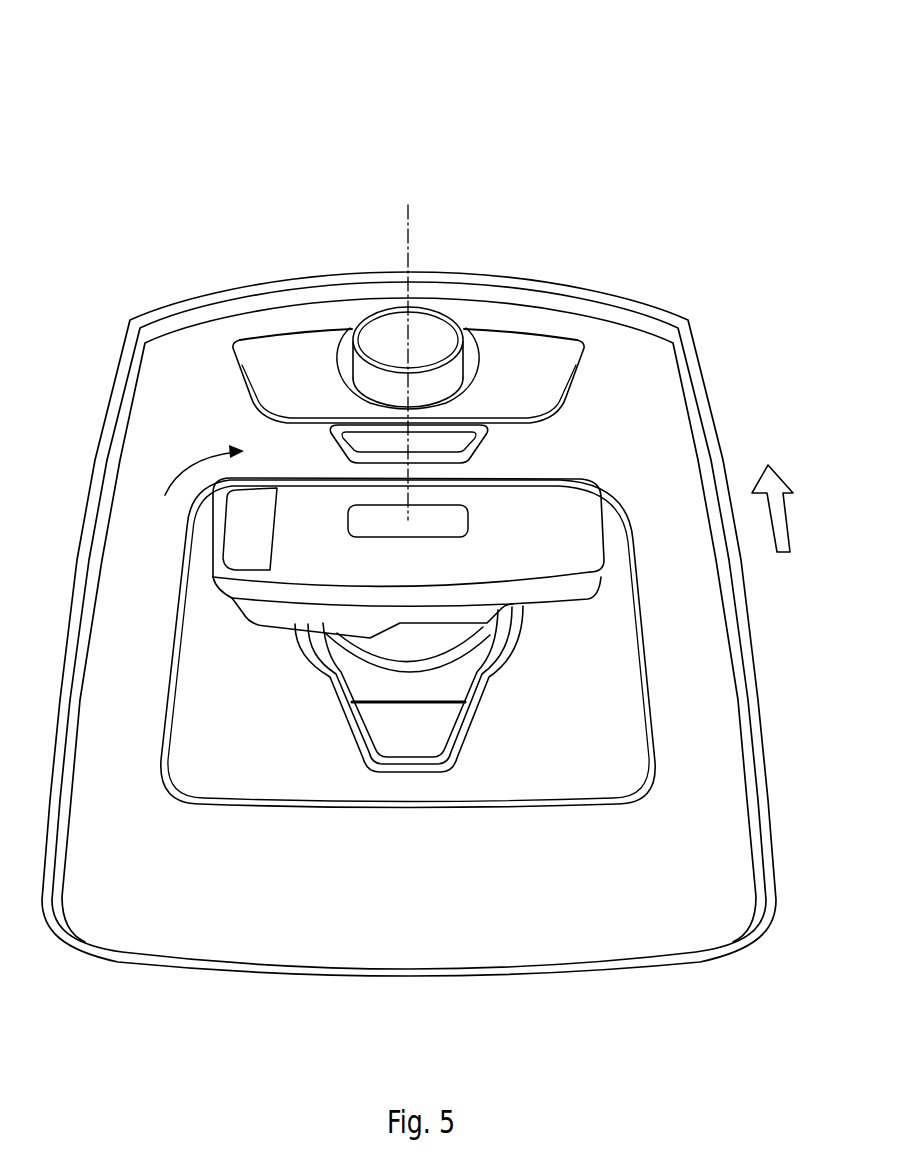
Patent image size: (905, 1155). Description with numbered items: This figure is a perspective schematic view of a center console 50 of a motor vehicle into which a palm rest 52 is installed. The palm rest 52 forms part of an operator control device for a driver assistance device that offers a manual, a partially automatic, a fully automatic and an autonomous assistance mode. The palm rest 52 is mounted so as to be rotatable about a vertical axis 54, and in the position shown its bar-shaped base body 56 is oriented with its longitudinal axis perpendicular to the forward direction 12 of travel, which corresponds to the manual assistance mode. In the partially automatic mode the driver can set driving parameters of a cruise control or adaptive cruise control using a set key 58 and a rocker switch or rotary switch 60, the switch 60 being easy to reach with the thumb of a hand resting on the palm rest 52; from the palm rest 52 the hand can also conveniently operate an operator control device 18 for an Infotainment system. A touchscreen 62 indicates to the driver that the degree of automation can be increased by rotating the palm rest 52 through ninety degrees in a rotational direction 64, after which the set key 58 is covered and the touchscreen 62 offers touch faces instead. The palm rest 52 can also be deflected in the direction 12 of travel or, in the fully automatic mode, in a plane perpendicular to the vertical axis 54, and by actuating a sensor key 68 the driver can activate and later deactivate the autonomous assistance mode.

The forward direction of travel 12 is at (778, 527).
The operator control device 18 is at (430, 325).
The center console 50 is at (692, 168).
The palm rest 52 is at (556, 464).
The vertical axis 54 is at (407, 233).
The bar-shaped base body 56 is at (367, 578).
The set key 58 is at (407, 743).
The rocker switch or rotary switch 60 is at (230, 600).
The touchscreen 62 is at (237, 536).
The rotational direction 64 is at (187, 462).
The sensor key 68 is at (458, 521).